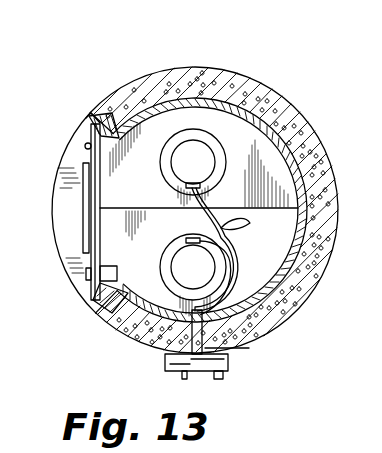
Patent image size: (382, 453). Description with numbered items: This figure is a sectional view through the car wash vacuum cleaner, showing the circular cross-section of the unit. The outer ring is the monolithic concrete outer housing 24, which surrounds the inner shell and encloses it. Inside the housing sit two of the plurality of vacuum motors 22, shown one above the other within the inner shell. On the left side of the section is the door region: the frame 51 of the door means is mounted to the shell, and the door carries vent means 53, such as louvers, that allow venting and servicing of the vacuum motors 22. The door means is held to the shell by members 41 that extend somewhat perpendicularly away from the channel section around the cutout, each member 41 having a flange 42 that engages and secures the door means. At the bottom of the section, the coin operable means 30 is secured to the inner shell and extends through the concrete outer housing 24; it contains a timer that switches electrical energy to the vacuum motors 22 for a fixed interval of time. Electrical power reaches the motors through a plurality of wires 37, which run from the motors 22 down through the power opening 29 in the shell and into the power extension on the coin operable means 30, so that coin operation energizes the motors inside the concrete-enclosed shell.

The monolithic concrete outer housing 24 is at (272, 92).
The members 41 is at (114, 113).
The flange 42 is at (89, 117).
The vent means 53 is at (85, 196).
The frame 51 is at (93, 283).
The vacuum motors 22 is at (180, 170).
The wires 37 is at (250, 224).
The power opening 29 is at (249, 348).
The coin operable means 30 is at (226, 364).